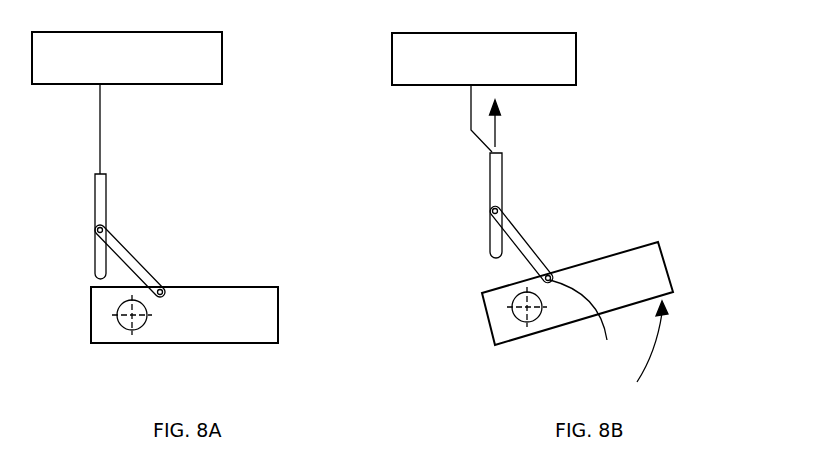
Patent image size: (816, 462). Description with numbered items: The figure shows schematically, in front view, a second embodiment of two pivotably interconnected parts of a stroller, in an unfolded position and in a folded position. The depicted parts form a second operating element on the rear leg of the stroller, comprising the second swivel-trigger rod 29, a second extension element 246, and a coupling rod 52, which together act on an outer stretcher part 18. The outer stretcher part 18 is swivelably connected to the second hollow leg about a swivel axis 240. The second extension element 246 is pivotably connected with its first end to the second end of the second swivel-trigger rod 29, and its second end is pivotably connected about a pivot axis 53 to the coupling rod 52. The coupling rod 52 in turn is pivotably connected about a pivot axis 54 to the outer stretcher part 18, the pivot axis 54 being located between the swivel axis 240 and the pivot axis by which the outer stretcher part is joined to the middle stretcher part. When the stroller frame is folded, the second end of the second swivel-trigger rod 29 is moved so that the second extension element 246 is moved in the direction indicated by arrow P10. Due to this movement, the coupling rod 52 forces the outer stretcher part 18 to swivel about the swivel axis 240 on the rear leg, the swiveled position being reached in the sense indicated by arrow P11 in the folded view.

In FIG. 8A, the second swivel-trigger rod 29 is at (152, 84).
In FIG. 8B, the second swivel-trigger rod 29 is at (576, 72).
In FIG. 8A, the second extension element 246 is at (95, 183).
In FIG. 8B, the second extension element 246 is at (495, 172).
In FIG. 8A, the coupling rod 52 is at (127, 255).
In FIG. 8B, the coupling rod 52 is at (535, 243).
In FIG. 8A, the pivot axis 53 is at (98, 231).
In FIG. 8B, the pivot axis 53 is at (498, 211).
In FIG. 8A, the pivot axis 54 is at (160, 287).
In FIG. 8B, the pivot axis 54 is at (584, 323).
In FIG. 8A, the outer stretcher part 18 is at (220, 300).
In FIG. 8B, the outer stretcher part 18 is at (643, 262).
In FIG. 8A, the swivel axis 240 is at (134, 318).
In FIG. 8B, the swivel axis 240 is at (530, 311).
In FIG. 8B, the arrow P10 is at (497, 125).
In FIG. 8B, the plate rotation direction P11 is at (656, 355).